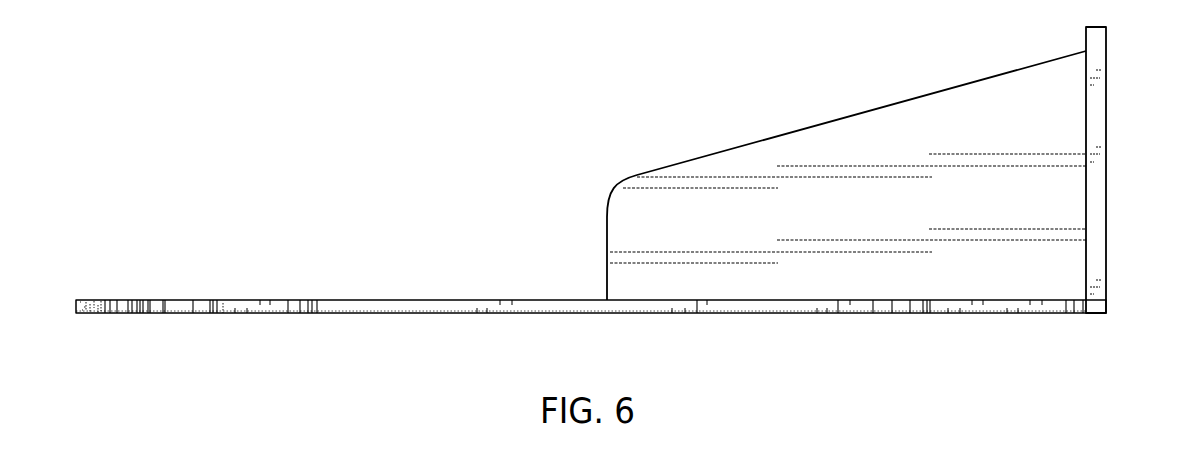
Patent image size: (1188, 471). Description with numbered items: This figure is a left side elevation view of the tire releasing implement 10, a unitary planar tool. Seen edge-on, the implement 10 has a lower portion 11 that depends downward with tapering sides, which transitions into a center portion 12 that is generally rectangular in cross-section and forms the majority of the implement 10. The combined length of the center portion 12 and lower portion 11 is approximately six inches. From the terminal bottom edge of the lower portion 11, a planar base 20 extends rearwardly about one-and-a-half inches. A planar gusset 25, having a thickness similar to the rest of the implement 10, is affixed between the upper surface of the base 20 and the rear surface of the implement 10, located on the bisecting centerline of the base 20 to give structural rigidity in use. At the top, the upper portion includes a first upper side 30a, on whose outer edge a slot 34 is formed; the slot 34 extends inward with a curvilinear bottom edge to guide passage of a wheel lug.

The tire releasing implement 10 is at (97, 217).
The lower portion 11 is at (940, 307).
The center portion 12 is at (570, 307).
The base 20 is at (1095, 203).
The gusset 25 is at (867, 144).
The first upper side 30a is at (97, 313).
The slot 34 is at (157, 305).